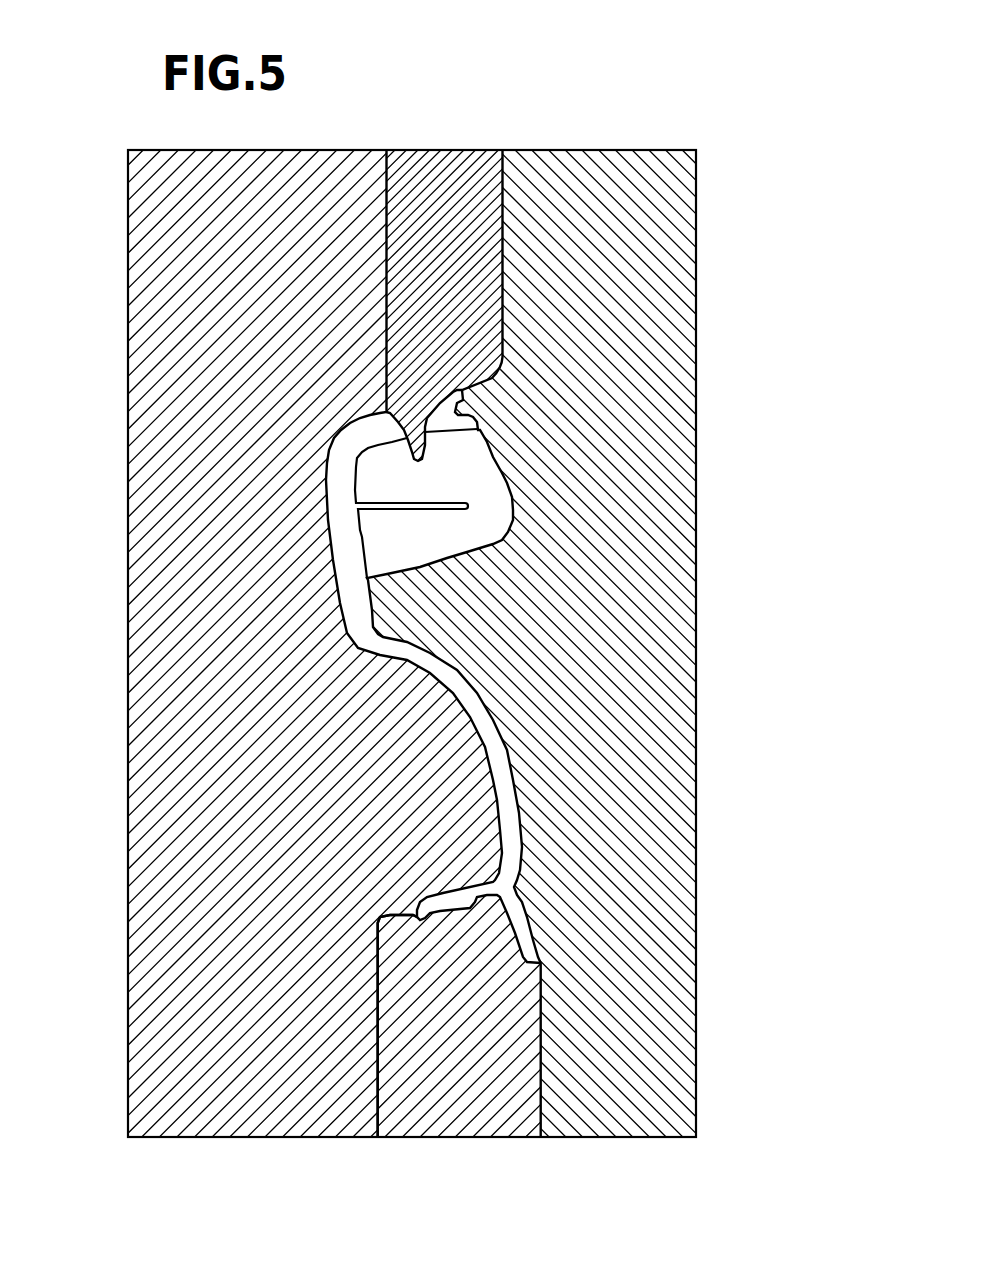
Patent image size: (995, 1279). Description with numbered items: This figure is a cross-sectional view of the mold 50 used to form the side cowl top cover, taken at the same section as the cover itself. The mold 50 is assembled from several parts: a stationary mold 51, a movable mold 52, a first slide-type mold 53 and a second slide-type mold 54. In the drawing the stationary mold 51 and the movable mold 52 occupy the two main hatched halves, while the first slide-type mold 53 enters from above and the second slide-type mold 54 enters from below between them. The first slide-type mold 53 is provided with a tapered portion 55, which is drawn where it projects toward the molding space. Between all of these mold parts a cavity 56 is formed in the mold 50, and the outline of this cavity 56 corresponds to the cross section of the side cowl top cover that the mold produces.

The mold 50 is at (688, 118).
The stationary mold 51 is at (186, 649).
The movable mold 52 is at (653, 613).
The first slide-type mold 53 is at (448, 185).
The second slide-type mold 54 is at (455, 1080).
The tapered portion 55 is at (427, 449).
The cavity 56 is at (330, 545).